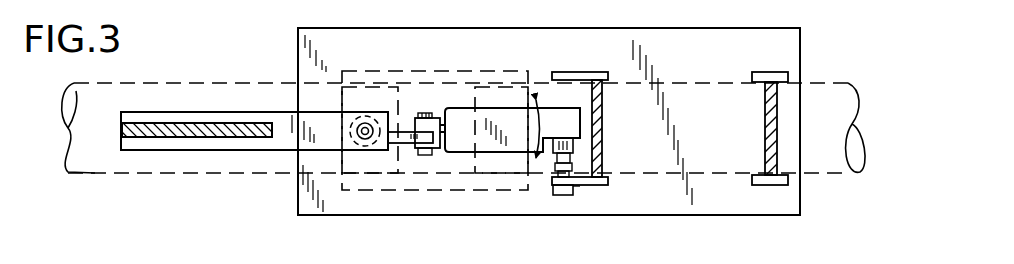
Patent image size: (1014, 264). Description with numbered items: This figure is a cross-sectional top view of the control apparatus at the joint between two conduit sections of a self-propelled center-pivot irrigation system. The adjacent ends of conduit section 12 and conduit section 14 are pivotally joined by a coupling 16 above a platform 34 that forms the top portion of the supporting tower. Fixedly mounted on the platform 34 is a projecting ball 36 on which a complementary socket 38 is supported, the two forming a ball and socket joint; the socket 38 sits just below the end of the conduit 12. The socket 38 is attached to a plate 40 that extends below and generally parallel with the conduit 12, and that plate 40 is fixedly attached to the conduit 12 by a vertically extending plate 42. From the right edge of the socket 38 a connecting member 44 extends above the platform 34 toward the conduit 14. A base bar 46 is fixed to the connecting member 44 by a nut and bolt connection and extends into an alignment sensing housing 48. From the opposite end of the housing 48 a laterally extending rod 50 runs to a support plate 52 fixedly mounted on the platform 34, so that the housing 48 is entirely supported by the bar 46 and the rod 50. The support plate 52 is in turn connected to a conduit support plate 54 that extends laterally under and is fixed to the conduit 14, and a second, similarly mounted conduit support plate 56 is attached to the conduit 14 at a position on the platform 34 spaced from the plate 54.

The conduit section 12 is at (158, 82).
The conduit section 14 is at (830, 83).
The coupling 16 is at (424, 66).
The platform 34 is at (310, 48).
The projecting ball 36 is at (355, 143).
The socket 38 is at (381, 150).
The plate 40 is at (283, 150).
The vertically extending plate 42 is at (178, 137).
The connecting member 44 is at (405, 143).
The base bar 46 is at (435, 150).
The alignment sensing housing 48 is at (507, 158).
The laterally extending rod 50 is at (555, 194).
The support plate 52 is at (582, 187).
The conduit support plate 54 is at (602, 126).
The conduit support plate 56 is at (765, 132).